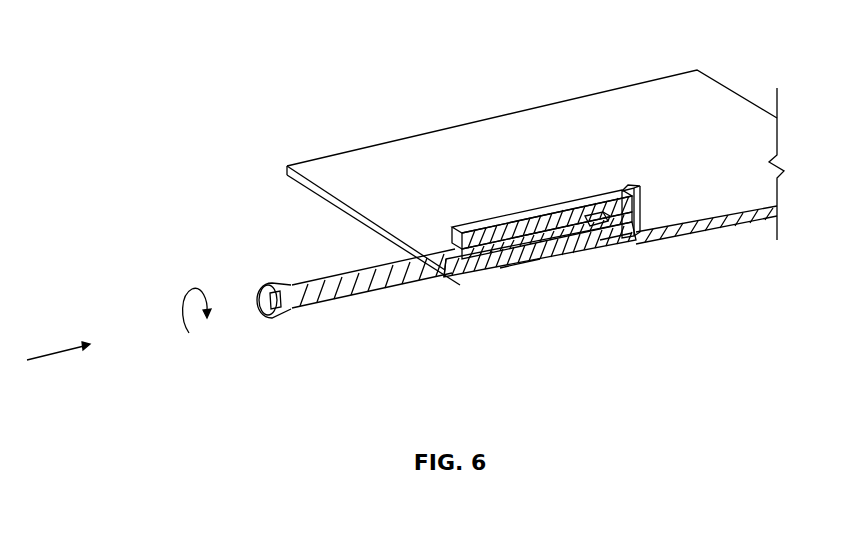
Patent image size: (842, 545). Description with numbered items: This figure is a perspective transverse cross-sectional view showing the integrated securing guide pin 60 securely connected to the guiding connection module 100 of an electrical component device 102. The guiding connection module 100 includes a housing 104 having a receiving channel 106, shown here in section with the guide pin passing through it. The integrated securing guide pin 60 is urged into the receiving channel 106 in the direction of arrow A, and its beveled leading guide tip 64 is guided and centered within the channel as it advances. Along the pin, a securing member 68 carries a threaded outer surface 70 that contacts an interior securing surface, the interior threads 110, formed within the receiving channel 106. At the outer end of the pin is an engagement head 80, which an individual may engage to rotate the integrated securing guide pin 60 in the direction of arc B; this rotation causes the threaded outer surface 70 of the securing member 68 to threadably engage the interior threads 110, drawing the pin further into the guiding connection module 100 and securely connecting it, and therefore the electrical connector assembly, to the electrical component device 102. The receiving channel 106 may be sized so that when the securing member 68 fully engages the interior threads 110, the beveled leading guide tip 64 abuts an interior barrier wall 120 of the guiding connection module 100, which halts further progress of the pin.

The integrated securing guide pin 60 is at (264, 252).
The beveled leading guide tip 64 is at (593, 196).
The securing member 68 is at (488, 277).
The threaded outer surface 70 is at (483, 232).
The engagement head 80 is at (271, 318).
The guiding connection module 100 is at (611, 246).
The electrical component device 102 is at (597, 92).
The housing 104 is at (473, 227).
The receiving channel 106 is at (448, 275).
The interior threads 110 is at (517, 278).
The interior barrier wall 120 is at (638, 190).
The arrow A is at (60, 355).
The arc B is at (183, 300).